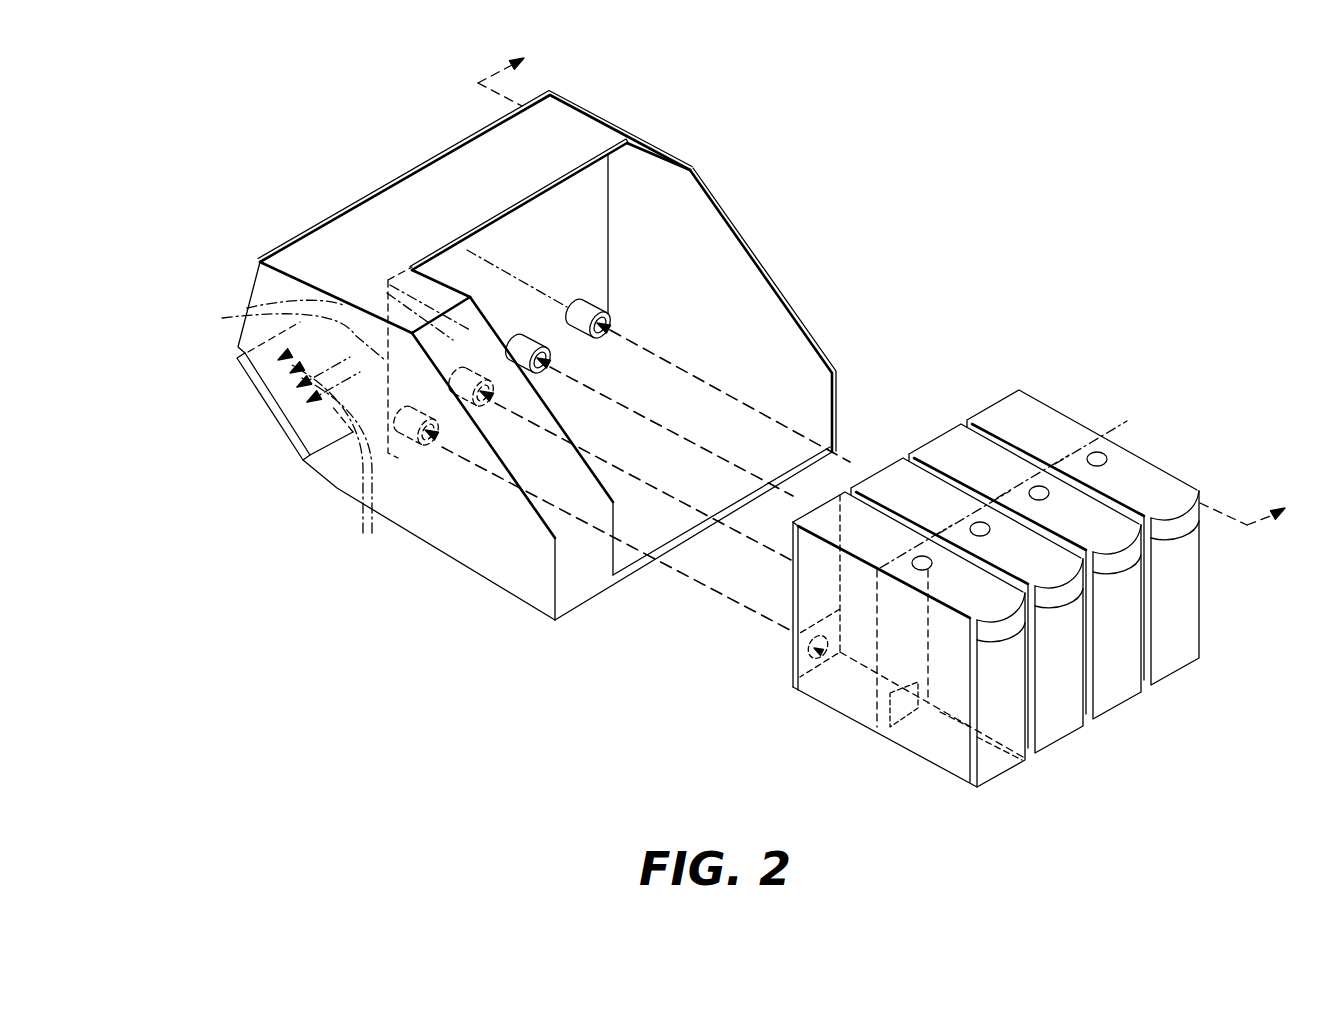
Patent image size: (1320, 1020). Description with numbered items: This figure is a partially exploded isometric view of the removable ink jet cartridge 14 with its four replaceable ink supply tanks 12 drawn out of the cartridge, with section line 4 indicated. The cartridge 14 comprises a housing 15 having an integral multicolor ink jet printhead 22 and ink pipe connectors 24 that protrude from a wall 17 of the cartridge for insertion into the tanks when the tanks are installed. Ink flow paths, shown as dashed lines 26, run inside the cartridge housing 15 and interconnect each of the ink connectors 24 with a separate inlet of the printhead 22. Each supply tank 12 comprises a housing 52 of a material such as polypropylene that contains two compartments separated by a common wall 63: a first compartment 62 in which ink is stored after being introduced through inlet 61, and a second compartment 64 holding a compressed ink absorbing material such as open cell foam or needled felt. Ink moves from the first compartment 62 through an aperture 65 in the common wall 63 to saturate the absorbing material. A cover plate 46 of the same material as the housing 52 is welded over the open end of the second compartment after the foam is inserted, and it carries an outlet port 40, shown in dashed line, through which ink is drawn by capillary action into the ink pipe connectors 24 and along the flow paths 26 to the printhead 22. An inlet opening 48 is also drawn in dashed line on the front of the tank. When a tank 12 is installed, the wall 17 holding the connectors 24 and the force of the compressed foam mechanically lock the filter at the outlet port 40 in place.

The section line 4- 4 is at (894, 281).
The ink supply tank 12 is at (977, 591).
The ink jet cartridge 14 is at (406, 139).
The housing 15 is at (578, 126).
The wall 17 is at (586, 246).
The multicolor ink jet printhead 22 is at (268, 403).
The ink pipe connectors 24 is at (533, 342).
The ink flow paths 26 is at (378, 406).
The outlet port 40 is at (823, 685).
The cover plate 46 is at (997, 412).
The inlet port 48 is at (805, 660).
The housing 52 is at (882, 487).
The inlet 61 is at (921, 555).
The first compartment 62 is at (947, 747).
The common wall 63 is at (877, 727).
The second compartment 64 is at (857, 697).
The aperture 65 is at (898, 710).